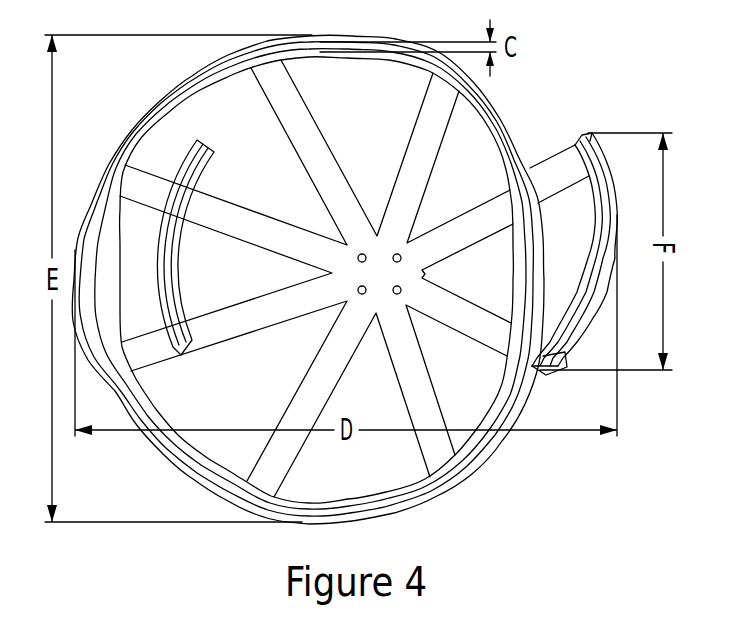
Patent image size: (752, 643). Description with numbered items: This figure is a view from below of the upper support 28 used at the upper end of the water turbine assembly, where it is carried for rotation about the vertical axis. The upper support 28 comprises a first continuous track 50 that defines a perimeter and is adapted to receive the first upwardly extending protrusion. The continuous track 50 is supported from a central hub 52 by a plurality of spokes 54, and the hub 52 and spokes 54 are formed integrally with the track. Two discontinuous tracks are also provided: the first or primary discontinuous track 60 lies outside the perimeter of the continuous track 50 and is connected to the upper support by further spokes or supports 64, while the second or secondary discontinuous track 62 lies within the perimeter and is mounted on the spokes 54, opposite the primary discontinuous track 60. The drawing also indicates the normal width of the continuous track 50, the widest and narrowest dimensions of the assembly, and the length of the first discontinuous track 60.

The upper support 28 is at (590, 79).
The first continuous track 50 is at (524, 143).
The hub 52 is at (326, 316).
The spokes 54 is at (403, 187).
The first discontinuous track 60 is at (566, 331).
The second discontinuous track 62 is at (174, 282).
The further spokes or supports 64 is at (556, 186).